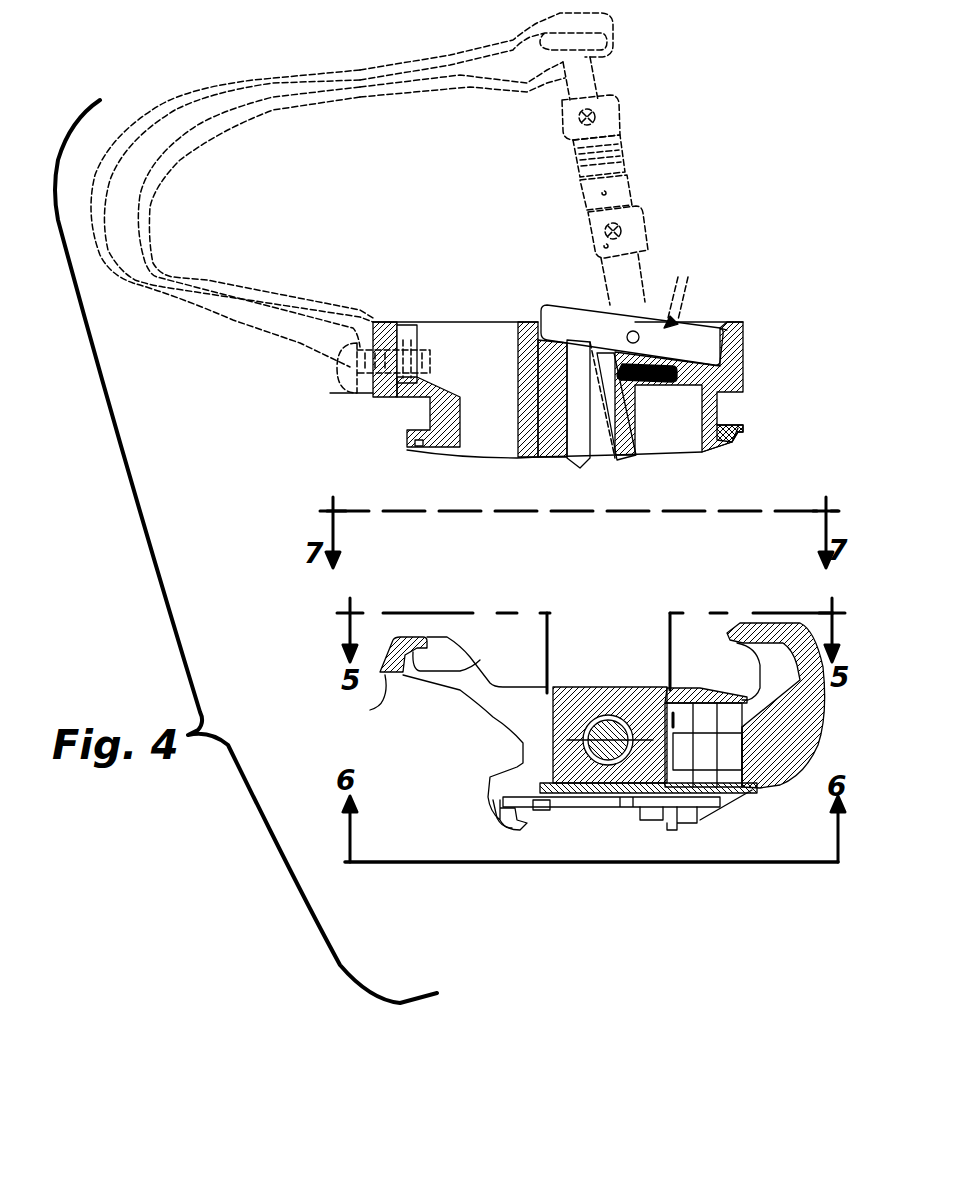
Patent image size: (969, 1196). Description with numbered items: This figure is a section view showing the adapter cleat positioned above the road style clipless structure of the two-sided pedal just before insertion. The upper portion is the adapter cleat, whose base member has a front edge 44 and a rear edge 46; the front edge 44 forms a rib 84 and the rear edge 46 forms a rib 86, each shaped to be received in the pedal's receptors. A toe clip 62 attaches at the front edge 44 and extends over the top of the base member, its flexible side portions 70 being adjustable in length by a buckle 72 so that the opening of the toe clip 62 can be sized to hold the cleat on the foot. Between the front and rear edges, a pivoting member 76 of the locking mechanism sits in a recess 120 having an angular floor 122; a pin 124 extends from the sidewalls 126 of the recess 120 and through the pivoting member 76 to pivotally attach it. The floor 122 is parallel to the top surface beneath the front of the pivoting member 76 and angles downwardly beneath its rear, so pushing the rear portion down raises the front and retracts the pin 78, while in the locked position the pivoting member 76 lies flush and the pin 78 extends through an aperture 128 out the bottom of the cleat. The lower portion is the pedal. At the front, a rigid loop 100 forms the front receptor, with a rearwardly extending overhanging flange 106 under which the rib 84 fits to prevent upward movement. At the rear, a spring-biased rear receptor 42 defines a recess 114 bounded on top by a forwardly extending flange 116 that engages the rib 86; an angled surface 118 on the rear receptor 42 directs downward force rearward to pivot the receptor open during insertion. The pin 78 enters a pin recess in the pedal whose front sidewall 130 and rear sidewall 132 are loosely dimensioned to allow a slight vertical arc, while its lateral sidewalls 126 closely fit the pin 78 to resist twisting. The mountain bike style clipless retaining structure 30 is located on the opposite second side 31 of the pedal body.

The toe clip 62 is at (358, 64).
The flexible side portions 70 is at (590, 82).
The buckle 72 is at (625, 142).
The pin 124 is at (657, 320).
The recess 120 is at (697, 325).
The angular floor 122 is at (693, 360).
The rear edge 46 is at (743, 393).
The rib 86 is at (740, 433).
The pin 78 is at (610, 463).
The aperture 128 is at (540, 430).
The pivoting member 76 is at (555, 322).
The front edge 44 is at (350, 393).
The rib 84 is at (407, 447).
The rigid loop 100 is at (370, 710).
The overhanging flange 106 is at (470, 668).
The front sidewall 130 is at (560, 687).
The sidewalls 126 is at (583, 687).
The rear sidewall 132 is at (647, 650).
The angled surface 118 is at (737, 638).
The flange 116 is at (755, 637).
The recess 114 is at (773, 667).
The rear receptor 42 is at (793, 747).
The second side 31 is at (732, 798).
The mountain bike style clipless retaining structure 30 is at (513, 830).